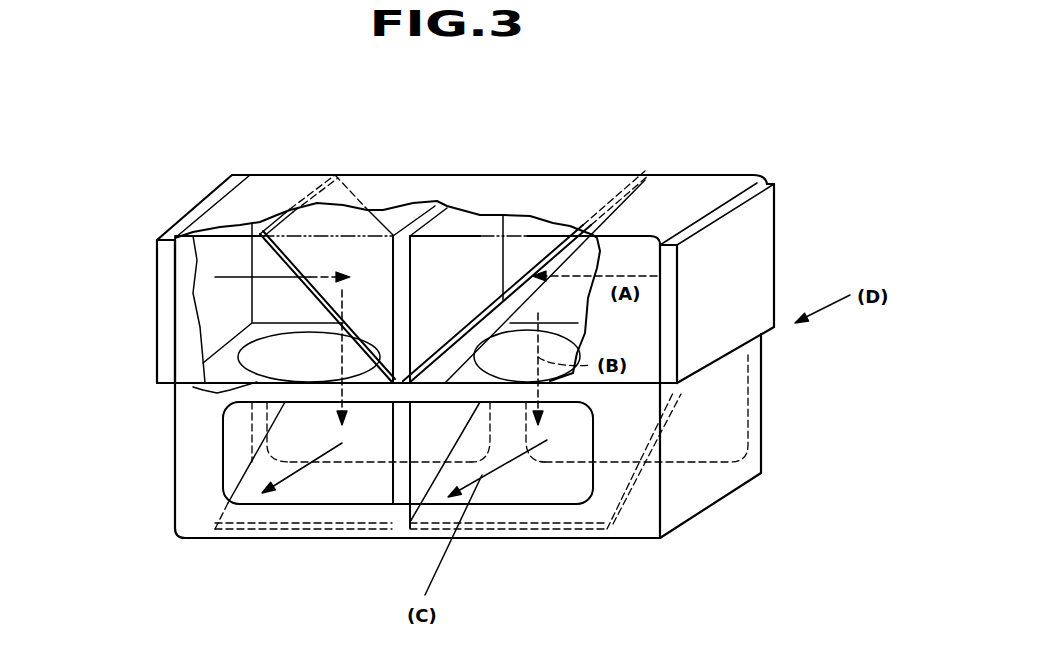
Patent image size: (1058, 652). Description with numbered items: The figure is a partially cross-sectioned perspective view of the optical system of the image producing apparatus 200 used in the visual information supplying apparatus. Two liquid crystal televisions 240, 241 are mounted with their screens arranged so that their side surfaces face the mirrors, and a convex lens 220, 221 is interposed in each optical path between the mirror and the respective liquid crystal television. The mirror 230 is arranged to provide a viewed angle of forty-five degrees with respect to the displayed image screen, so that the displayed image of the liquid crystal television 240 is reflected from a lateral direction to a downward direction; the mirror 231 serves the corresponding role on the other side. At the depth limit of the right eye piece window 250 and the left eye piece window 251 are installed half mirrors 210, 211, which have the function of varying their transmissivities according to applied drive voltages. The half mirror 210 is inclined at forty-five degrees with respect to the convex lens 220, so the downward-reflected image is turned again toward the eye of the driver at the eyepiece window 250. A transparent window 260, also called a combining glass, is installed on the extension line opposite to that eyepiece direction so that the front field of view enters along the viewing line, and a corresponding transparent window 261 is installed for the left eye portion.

The image producing apparatus 200 is at (812, 540).
The half mirror 210 is at (618, 505).
The half mirror 211 is at (252, 473).
The convex lens 220 is at (503, 352).
The convex lens 221 is at (277, 365).
The mirror 230 is at (611, 199).
The mirror 231 is at (304, 202).
The liquid crystal television 240 is at (762, 244).
The liquid crystal television 241 is at (157, 257).
The right eye piece window 250 is at (540, 504).
The left eye piece window 251 is at (296, 493).
The transparent window 260 is at (728, 393).
The transparent window 261 is at (366, 462).